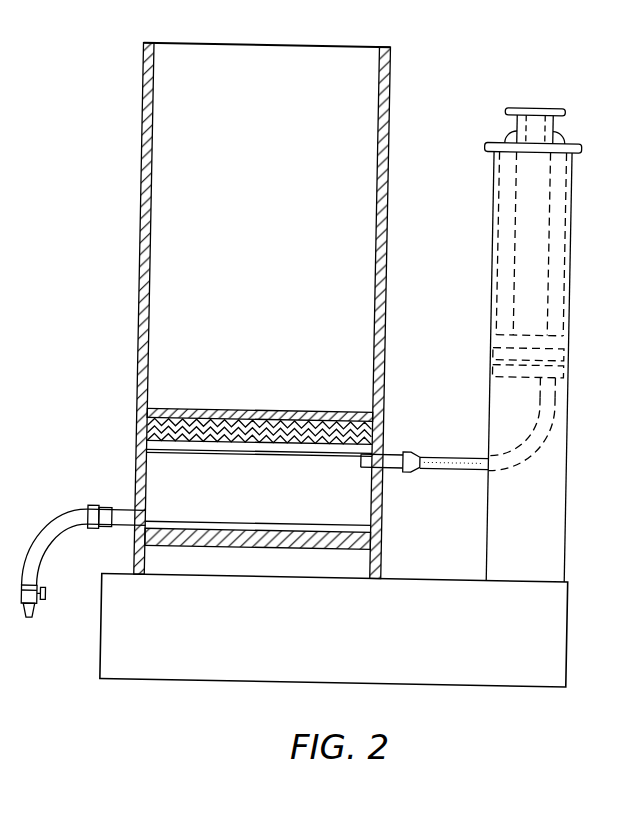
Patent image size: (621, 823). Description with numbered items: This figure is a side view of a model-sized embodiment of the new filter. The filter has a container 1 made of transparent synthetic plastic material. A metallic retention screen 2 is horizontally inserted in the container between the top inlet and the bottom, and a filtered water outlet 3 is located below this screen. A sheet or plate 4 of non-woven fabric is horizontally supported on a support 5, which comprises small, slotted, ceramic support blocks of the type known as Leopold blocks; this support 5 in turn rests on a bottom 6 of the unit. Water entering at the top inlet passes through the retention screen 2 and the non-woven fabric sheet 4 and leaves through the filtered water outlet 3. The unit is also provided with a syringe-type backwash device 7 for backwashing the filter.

The container 1 is at (384, 221).
The metallic retention screen 2 is at (360, 412).
The filtered water outlet 3 is at (118, 514).
The sheet or plate of non-woven fabric 4 is at (363, 434).
The support 5 is at (369, 510).
The bottom 6 is at (166, 544).
The syringe-type backwash device 7 is at (527, 104).